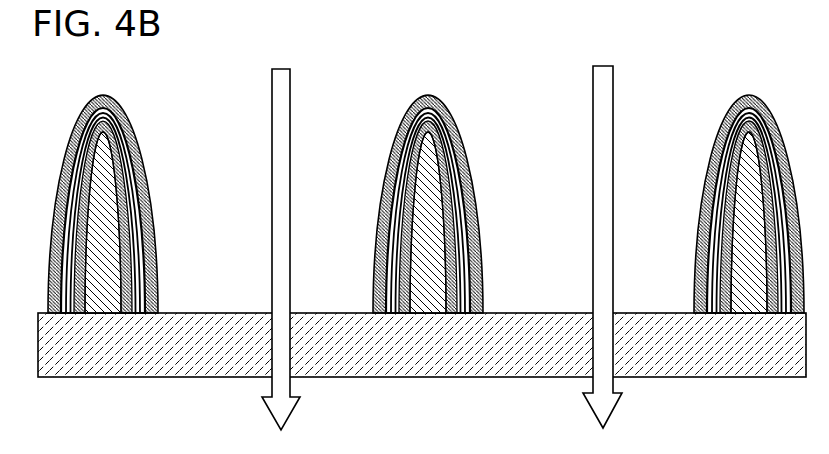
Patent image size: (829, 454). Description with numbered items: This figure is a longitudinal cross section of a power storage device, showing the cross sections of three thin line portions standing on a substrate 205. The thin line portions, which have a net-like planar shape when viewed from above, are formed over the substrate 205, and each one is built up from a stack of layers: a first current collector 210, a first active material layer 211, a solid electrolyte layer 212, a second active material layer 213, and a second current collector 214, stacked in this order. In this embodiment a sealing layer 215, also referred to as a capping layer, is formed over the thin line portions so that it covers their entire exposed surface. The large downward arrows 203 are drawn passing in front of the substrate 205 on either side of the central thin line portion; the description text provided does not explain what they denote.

The ion beam / irradiation direction arrow 203 is at (282, 118).
The substrate 205 is at (197, 333).
The outer protective layer 210 is at (127, 123).
The first layer 211 is at (133, 140).
The second layer 212 is at (143, 162).
The third layer 213 is at (147, 188).
The fourth layer 214 is at (150, 223).
The core (columnar structure) 215 is at (148, 288).